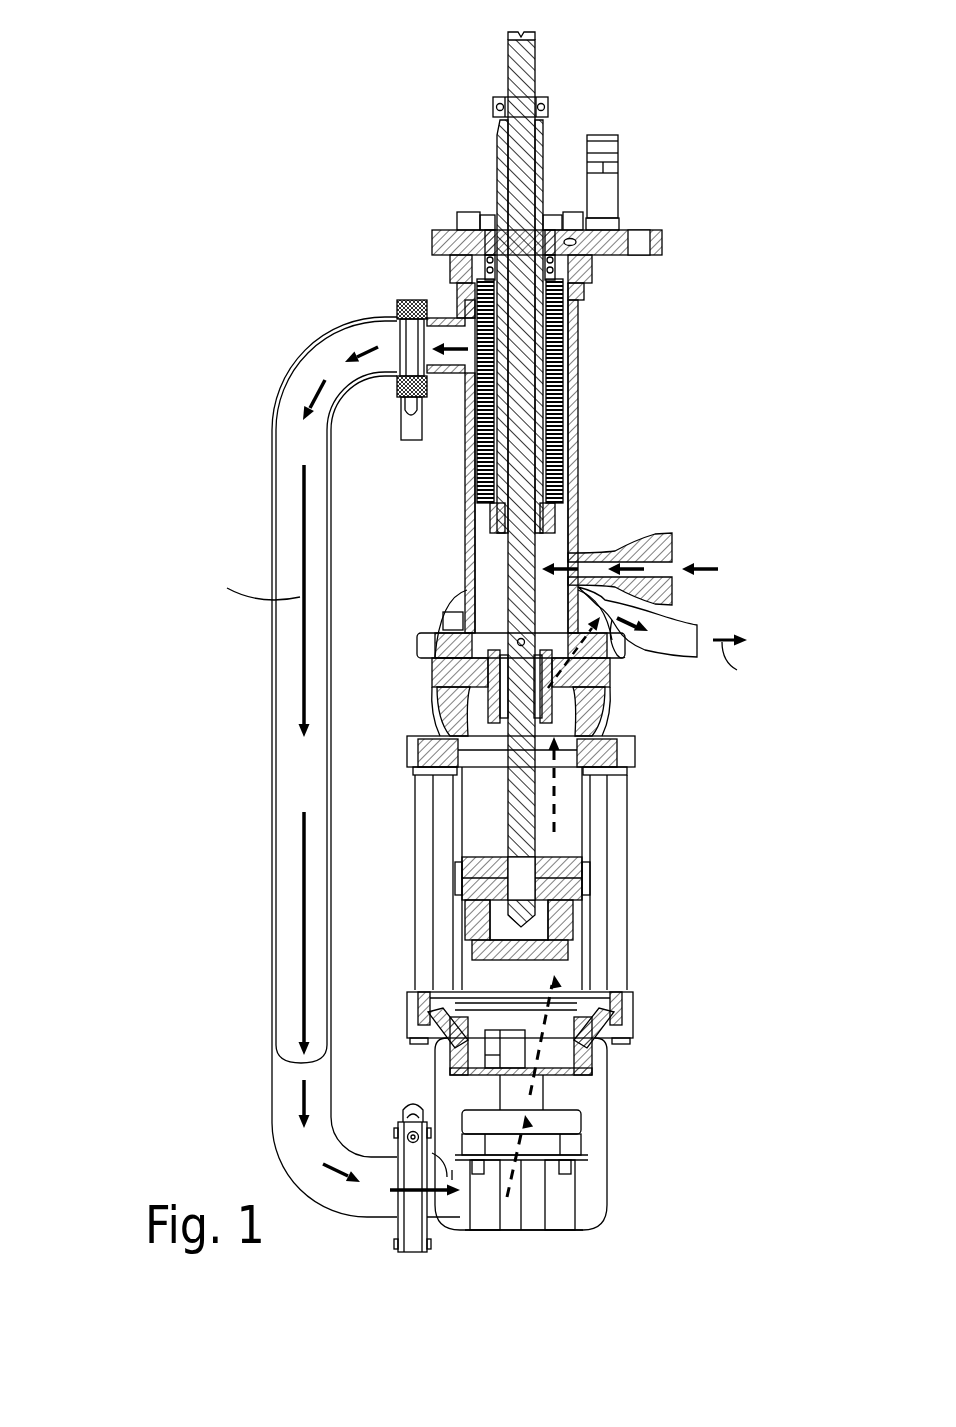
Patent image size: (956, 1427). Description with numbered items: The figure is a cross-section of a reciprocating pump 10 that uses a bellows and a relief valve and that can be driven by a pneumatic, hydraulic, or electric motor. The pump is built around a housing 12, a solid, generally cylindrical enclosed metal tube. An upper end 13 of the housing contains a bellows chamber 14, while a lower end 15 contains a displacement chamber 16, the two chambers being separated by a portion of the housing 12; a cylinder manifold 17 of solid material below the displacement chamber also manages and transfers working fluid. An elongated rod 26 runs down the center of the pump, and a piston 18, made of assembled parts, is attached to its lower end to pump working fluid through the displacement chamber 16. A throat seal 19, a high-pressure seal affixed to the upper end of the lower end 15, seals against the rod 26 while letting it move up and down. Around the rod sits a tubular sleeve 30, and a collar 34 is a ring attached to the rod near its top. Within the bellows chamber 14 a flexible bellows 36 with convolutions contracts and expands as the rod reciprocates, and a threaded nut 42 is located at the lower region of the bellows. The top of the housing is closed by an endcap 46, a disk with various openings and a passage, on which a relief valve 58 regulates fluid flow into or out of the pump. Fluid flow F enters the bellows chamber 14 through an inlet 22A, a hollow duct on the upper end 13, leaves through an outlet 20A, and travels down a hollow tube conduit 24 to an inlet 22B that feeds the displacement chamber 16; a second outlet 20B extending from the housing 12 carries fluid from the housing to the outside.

The reciprocating pump 10 is at (143, 183).
The housing 12 is at (598, 395).
The upper end 13 is at (593, 276).
The bellows chamber 14 is at (497, 565).
The lower end 15 is at (660, 998).
The displacement chamber 16 is at (565, 797).
The cylinder manifold 17 is at (620, 1108).
The piston 18 is at (578, 906).
The throat seal 19 is at (565, 702).
The outlet 20A is at (438, 318).
The outlet 20B is at (697, 632).
The inlet 22A is at (683, 555).
The inlet 22B is at (440, 1220).
The conduit 24 is at (290, 378).
The rod 26 is at (508, 72).
The sleeve 30 is at (497, 148).
The collar 34 is at (550, 102).
The bellows 36 is at (553, 455).
The nut 42 is at (553, 527).
The endcap 46 is at (677, 230).
The relief valve 58 is at (620, 150).